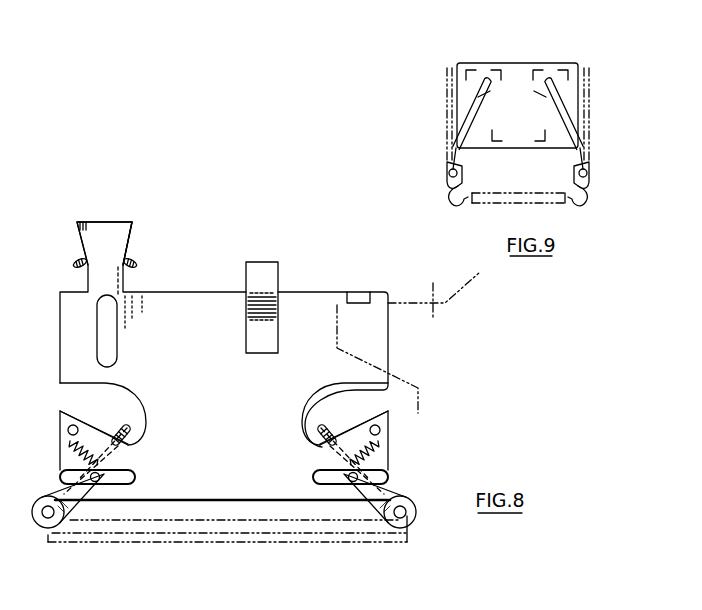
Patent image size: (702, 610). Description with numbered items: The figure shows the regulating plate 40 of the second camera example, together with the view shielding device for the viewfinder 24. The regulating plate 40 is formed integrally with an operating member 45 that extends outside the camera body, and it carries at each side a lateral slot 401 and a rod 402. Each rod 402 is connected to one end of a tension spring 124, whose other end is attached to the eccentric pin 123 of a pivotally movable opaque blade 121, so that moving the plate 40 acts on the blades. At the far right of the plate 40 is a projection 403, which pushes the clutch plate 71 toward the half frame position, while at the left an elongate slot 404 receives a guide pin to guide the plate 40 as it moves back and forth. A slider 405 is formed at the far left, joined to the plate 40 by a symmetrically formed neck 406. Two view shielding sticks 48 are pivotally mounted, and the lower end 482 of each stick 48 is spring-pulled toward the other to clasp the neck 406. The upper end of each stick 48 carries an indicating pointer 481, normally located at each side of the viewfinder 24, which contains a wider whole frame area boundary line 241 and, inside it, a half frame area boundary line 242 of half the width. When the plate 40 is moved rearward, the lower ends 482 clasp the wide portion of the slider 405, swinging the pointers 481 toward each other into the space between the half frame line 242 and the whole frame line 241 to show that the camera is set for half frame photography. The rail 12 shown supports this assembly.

In FIG. 8, the rail 12 is at (80, 542).
In FIG. 8, the opaque blade 121 is at (131, 443).
In FIG. 8, the eccentric pin 123 is at (224, 461).
In FIG. 8, the tension spring 124 is at (59, 450).
In FIG. 9, the viewfinder 24 is at (511, 88).
In FIG. 9, the whole frame area boundary line 241 is at (559, 70).
In FIG. 9, the half frame area boundary line 242 is at (548, 70).
In FIG. 8, the regulating plate 40 is at (67, 335).
In FIG. 9, the regulating plate 40 is at (518, 114).
In FIG. 8, the lateral slot 401 is at (65, 482).
In FIG. 8, the rod 402 is at (62, 411).
In FIG. 8, the projection 403 is at (366, 293).
In FIG. 8, the elongate slot 404 is at (108, 354).
In FIG. 8, the slider 405 is at (105, 237).
In FIG. 9, the slider 405 is at (555, 192).
In FIG. 8, the neck 406 is at (127, 247).
In FIG. 8, the operating member 45 is at (246, 309).
In FIG. 9, the view shielding stick 48 is at (447, 172).
In FIG. 9, the indicating pointer 481 is at (548, 96).
In FIG. 8, the lower end of view shielding stick 482 is at (74, 263).
In FIG. 9, the lower end of view shielding stick 482 is at (466, 201).
In FIG. 8, the clutch plate 71 is at (432, 297).